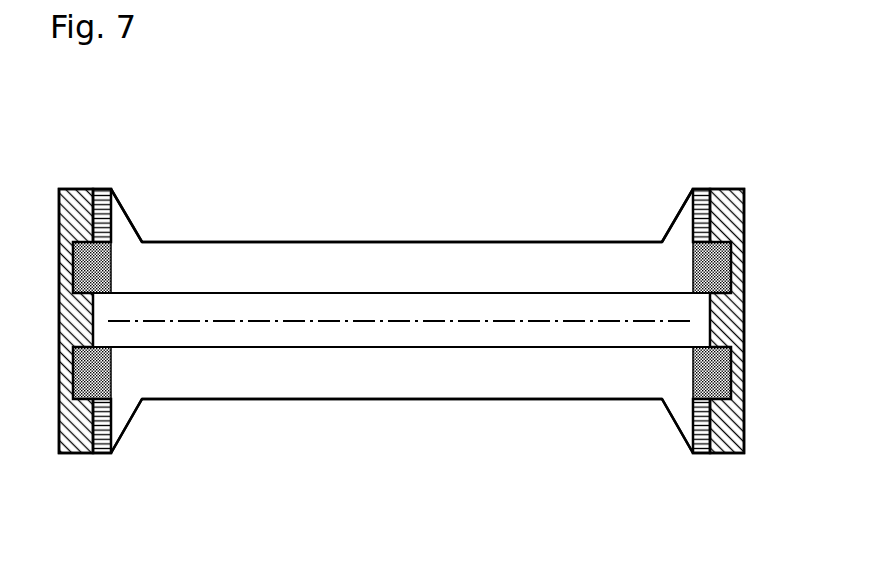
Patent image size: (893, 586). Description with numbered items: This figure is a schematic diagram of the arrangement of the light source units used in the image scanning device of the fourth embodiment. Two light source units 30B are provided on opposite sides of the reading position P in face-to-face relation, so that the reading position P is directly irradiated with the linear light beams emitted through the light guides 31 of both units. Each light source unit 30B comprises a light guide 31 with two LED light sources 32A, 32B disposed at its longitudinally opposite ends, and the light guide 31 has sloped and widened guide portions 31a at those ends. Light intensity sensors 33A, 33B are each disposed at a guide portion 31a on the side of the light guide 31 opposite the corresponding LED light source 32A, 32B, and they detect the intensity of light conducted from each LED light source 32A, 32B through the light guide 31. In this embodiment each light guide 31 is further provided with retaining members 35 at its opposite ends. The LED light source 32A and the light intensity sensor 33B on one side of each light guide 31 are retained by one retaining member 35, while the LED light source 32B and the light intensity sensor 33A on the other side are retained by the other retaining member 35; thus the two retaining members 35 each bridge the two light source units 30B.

The light source unit 30B is at (452, 239).
The light guide 31 is at (353, 257).
The guide portion 31a is at (128, 215).
The LED light source 32A is at (73, 270).
The LED light source 32B is at (743, 267).
The light intensity sensor 33A is at (697, 190).
The light intensity sensor 33B is at (97, 190).
The retaining member 35 is at (76, 189).
The reading position P is at (247, 322).